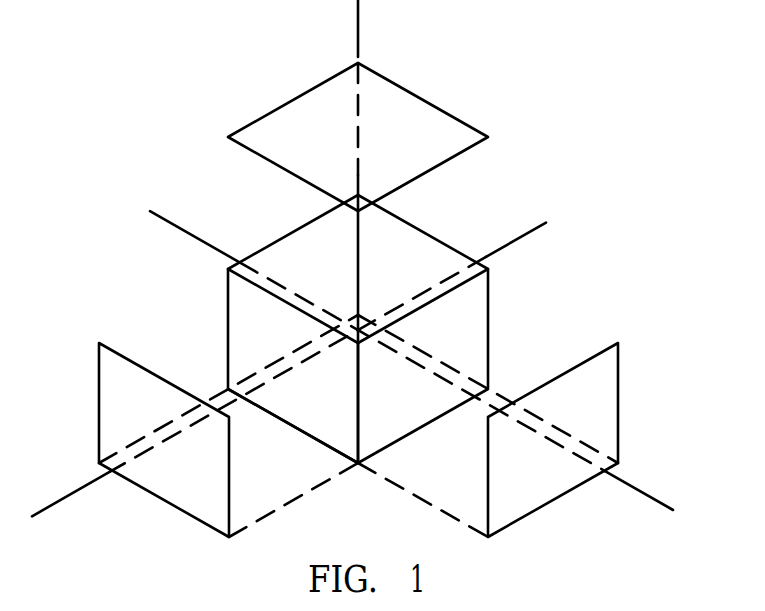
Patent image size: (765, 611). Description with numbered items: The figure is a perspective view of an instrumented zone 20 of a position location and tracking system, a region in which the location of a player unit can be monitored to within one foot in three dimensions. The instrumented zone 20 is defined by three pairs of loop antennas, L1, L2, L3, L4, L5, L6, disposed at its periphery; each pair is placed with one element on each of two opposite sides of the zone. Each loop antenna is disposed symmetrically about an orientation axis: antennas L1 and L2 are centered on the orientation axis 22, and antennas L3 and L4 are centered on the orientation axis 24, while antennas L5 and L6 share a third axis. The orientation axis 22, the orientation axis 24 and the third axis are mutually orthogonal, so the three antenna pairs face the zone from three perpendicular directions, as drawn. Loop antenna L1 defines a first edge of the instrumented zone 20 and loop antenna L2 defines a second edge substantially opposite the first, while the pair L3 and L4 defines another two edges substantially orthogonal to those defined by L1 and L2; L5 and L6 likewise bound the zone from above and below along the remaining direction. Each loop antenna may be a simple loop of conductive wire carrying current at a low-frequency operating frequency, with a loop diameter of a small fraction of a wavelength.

The instrumented zone 20 is at (363, 268).
The orientation axis 22 is at (517, 238).
The orientation axis 24 is at (635, 491).
The loop antenna L1 is at (431, 240).
The loop antenna L2 is at (180, 508).
The loop antenna L3 is at (619, 406).
The loop antenna L4 is at (228, 352).
The loop antenna L5 is at (442, 109).
The loop antenna L6 is at (303, 430).